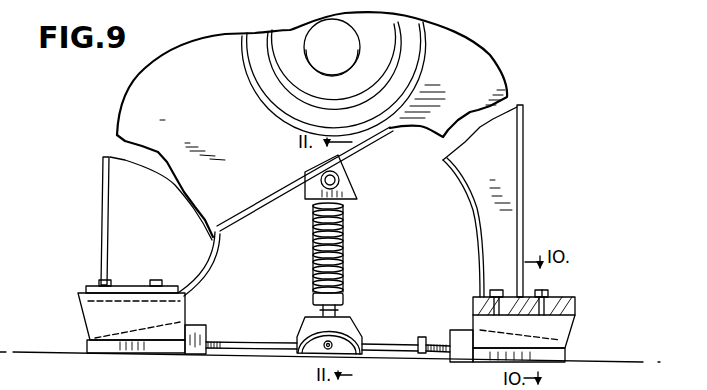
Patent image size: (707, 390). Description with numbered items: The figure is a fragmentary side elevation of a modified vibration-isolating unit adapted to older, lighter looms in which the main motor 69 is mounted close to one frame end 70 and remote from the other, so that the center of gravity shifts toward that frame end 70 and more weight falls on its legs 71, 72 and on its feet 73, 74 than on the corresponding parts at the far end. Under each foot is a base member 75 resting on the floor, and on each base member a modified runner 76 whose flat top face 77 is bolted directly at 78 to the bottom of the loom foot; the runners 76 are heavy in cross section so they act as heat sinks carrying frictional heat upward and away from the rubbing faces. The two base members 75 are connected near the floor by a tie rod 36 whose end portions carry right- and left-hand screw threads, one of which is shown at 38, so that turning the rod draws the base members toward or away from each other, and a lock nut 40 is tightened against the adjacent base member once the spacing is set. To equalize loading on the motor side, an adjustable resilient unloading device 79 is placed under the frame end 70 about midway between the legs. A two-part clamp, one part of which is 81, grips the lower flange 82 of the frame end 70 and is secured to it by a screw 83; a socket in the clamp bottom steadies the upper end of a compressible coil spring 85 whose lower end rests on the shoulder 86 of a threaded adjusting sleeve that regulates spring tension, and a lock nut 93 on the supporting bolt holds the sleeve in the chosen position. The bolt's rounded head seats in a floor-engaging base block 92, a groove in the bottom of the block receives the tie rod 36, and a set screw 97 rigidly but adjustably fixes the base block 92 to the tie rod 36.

The main motor 69 is at (376, 62).
The frame end 70 is at (160, 112).
The leg 71 is at (505, 246).
The leg 72 is at (125, 243).
The foot 73 is at (560, 293).
The foot 74 is at (92, 290).
The base member 75 is at (185, 354).
The runner 76 is at (103, 310).
The flat top face 77 is at (570, 297).
The bolt 78 is at (170, 283).
The adjustable resilient unloading device 79 is at (344, 257).
The clamp part 81 is at (358, 199).
The lower flange 82 is at (283, 203).
The screw 83 is at (340, 183).
The compressible coil spring 85 is at (344, 273).
The shoulder 86 is at (345, 300).
The base block 92 is at (361, 337).
The lock nut 93 is at (325, 312).
The set screw 97 is at (331, 349).
The tie rod 36 is at (268, 349).
The screw thread 38 is at (208, 333).
The lock nut 40 is at (445, 337).